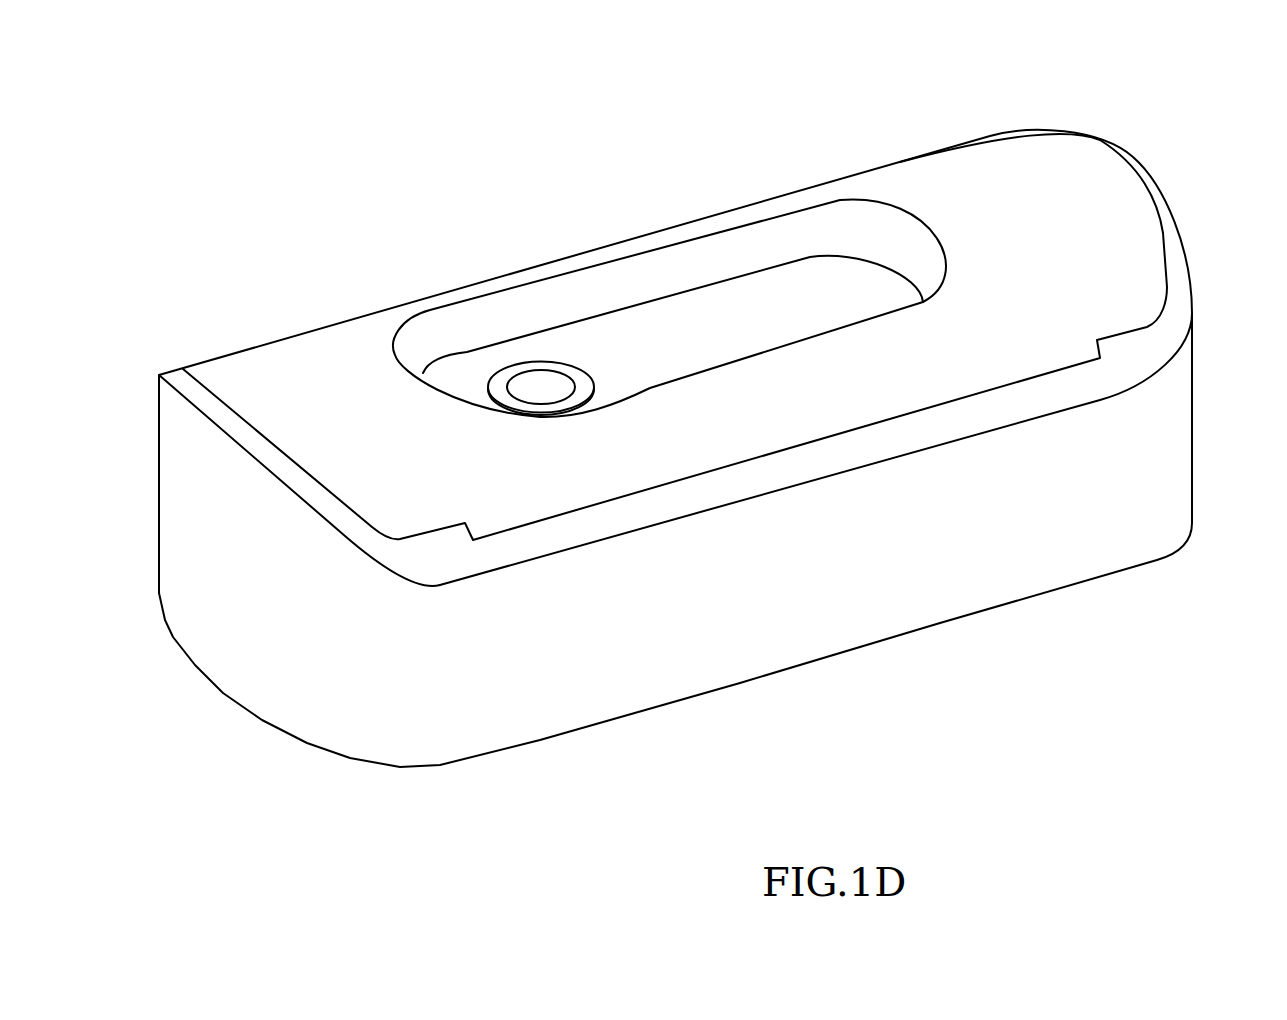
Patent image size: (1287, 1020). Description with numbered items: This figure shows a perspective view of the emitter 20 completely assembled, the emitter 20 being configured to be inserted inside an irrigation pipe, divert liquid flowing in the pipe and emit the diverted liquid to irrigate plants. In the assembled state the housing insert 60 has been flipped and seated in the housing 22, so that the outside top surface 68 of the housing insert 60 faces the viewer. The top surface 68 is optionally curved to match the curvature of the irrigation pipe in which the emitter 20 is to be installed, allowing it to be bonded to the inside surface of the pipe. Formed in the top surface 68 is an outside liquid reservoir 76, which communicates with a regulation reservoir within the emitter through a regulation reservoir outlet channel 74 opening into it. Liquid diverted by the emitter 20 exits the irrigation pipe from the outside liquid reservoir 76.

The emitter 20 is at (1137, 100).
The housing 22 is at (861, 571).
The housing insert 60 is at (1103, 222).
The outside top surface 68 is at (1065, 321).
The regulation reservoir outlet channel 74 is at (540, 387).
The outside liquid reservoir 76 is at (735, 293).